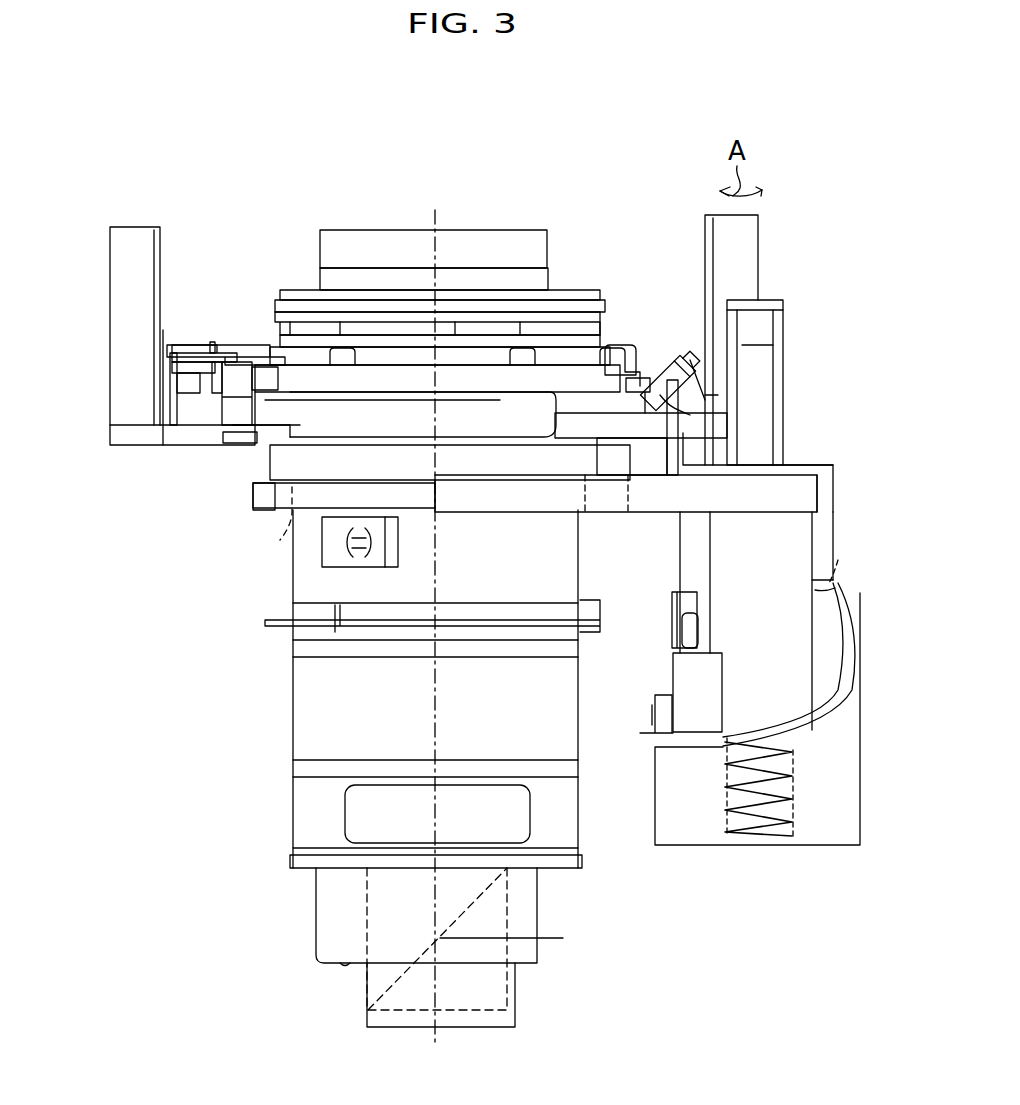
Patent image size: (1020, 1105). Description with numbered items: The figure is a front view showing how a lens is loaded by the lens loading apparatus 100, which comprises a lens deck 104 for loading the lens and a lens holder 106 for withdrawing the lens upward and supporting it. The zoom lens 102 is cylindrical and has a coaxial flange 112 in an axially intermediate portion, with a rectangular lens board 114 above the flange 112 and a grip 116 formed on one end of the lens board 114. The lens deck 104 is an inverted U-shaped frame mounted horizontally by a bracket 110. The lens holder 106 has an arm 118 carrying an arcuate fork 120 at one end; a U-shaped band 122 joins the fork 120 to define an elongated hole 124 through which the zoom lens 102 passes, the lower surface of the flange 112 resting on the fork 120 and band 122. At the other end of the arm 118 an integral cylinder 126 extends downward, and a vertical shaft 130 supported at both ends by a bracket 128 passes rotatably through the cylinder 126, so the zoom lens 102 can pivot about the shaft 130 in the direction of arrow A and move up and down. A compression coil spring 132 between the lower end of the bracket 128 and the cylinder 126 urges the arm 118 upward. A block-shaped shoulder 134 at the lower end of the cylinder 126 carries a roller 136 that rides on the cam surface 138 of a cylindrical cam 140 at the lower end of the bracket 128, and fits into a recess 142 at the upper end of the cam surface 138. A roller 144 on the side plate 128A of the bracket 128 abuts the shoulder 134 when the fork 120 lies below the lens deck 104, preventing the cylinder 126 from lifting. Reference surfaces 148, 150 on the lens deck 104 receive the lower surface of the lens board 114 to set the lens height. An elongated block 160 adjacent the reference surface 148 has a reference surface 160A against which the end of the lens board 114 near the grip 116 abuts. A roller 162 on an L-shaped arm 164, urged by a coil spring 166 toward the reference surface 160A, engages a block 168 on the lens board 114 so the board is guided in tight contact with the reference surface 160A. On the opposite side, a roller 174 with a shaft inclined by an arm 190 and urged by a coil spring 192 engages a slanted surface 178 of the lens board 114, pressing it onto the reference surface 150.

The lens loading apparatus 100 is at (680, 124).
The zoom lens 102 is at (553, 232).
The lens deck 104 is at (120, 450).
The lens holder 106 is at (828, 430).
The bracket 110 is at (112, 280).
The flange 112 is at (245, 425).
The lens board 114 is at (603, 352).
The grip 116 is at (230, 397).
The arm 118 is at (653, 514).
The fork 120 is at (600, 510).
The band 122 is at (265, 512).
The elongated hole 124 is at (266, 575).
The cylinder 126 is at (826, 506).
The bracket 128 is at (784, 300).
The side plate 128A is at (670, 598).
The shaft 130 is at (773, 347).
The compression coil spring 132 is at (722, 790).
The shoulder 134 is at (676, 684).
The roller 136 is at (660, 744).
The cam surface 138 is at (863, 632).
The cylindrical cam 140 is at (862, 782).
The recess 142 is at (851, 561).
The roller 144 is at (676, 634).
The reference surface 148 is at (258, 418).
The reference surface 150 is at (640, 418).
The block 160 is at (177, 398).
The reference surface 160A is at (205, 400).
The roller 162 is at (264, 347).
The arm 164 is at (238, 352).
The coil spring 166 is at (178, 345).
The block 168 is at (312, 402).
The roller 174 is at (650, 372).
The slanted surface 178 is at (636, 366).
The arm 190 is at (670, 405).
The coil spring 192 is at (697, 352).